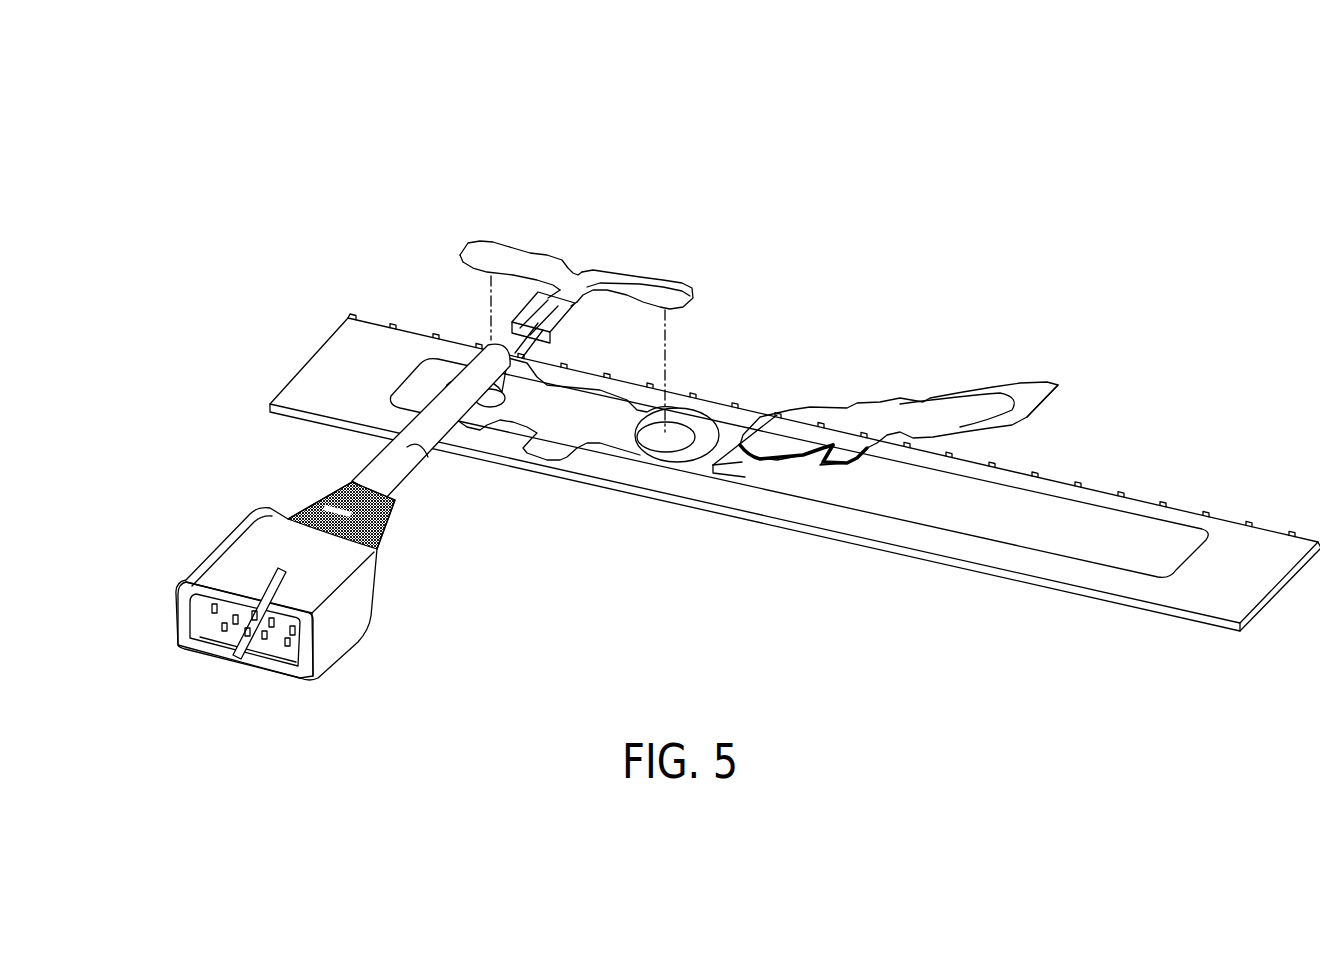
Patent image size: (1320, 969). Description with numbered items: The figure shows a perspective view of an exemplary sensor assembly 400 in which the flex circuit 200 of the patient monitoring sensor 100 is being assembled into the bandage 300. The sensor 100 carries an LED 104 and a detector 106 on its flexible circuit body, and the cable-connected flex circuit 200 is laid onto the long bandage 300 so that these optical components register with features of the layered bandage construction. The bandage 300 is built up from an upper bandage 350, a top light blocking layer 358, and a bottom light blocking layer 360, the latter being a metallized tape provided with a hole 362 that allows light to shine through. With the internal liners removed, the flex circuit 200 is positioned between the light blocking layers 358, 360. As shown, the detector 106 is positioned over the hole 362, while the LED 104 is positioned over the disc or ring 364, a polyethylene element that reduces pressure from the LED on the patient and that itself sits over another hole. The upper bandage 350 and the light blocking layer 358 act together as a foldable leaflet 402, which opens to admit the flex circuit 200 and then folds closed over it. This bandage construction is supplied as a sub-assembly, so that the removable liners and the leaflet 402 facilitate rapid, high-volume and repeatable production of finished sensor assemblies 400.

The sensor system assembly 400 is at (222, 129).
The bandage 300 is at (281, 300).
The patient monitoring sensor 100 is at (230, 479).
The flex circuit 200 is at (582, 258).
The LED 104 is at (711, 283).
The detector 106 is at (437, 228).
The foldable leaflet 402 is at (1062, 376).
The upper bandage 350 is at (1030, 414).
The light blocking layer 358 is at (888, 405).
The bottom light blocking layer 360 is at (550, 448).
The hole 362 is at (490, 400).
The disc 364 is at (666, 432).